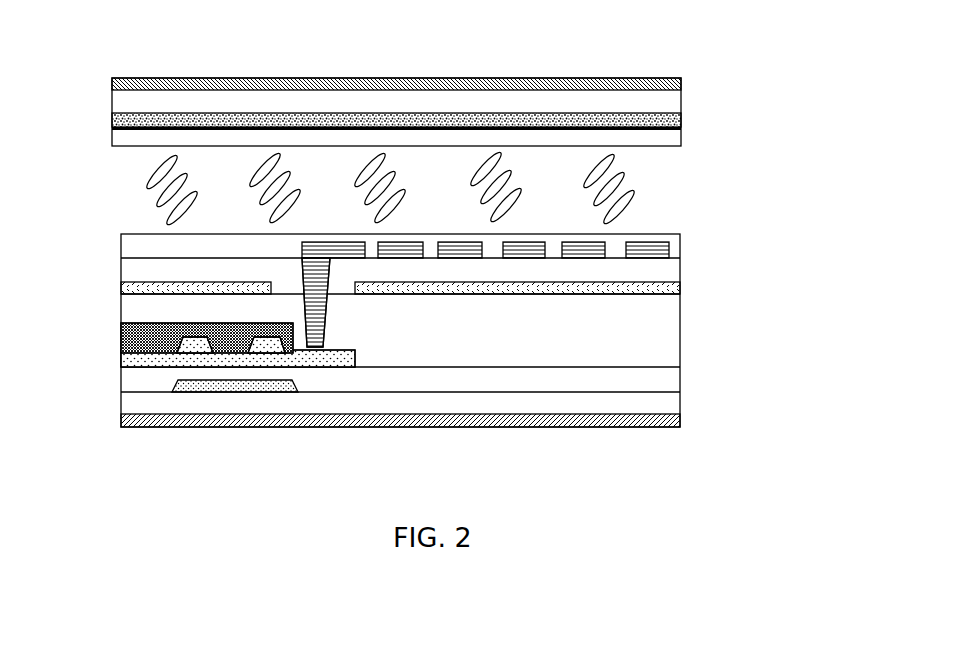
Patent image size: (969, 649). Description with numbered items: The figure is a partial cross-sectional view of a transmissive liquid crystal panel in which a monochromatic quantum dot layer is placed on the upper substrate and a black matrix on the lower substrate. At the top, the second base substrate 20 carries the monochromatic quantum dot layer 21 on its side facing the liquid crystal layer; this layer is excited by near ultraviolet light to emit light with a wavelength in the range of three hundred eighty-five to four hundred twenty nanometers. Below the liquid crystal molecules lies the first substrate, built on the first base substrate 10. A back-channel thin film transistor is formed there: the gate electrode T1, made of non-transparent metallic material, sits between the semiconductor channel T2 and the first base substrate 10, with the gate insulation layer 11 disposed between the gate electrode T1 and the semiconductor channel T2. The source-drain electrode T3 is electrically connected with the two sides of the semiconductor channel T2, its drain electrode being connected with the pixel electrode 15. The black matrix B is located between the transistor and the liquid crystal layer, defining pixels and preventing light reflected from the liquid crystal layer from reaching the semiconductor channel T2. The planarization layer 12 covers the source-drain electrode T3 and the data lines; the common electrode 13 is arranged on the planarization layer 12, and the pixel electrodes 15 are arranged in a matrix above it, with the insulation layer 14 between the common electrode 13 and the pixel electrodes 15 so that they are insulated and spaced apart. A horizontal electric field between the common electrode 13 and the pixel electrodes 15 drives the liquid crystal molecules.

The first base substrate 10 is at (630, 407).
The gate insulation layer 11 is at (630, 380).
The planarization layer 12 is at (630, 335).
The common electrode 13 is at (630, 290).
The insulation layer 14 is at (598, 277).
The pixel electrode 15 is at (592, 255).
The second base substrate 20 is at (648, 100).
The monochromatic quantum dot layer 21 is at (681, 110).
The black matrix B is at (220, 323).
The gate electrode T1 is at (197, 390).
The semiconductor channel T2 is at (150, 343).
The source-drain electrode T3 is at (173, 323).